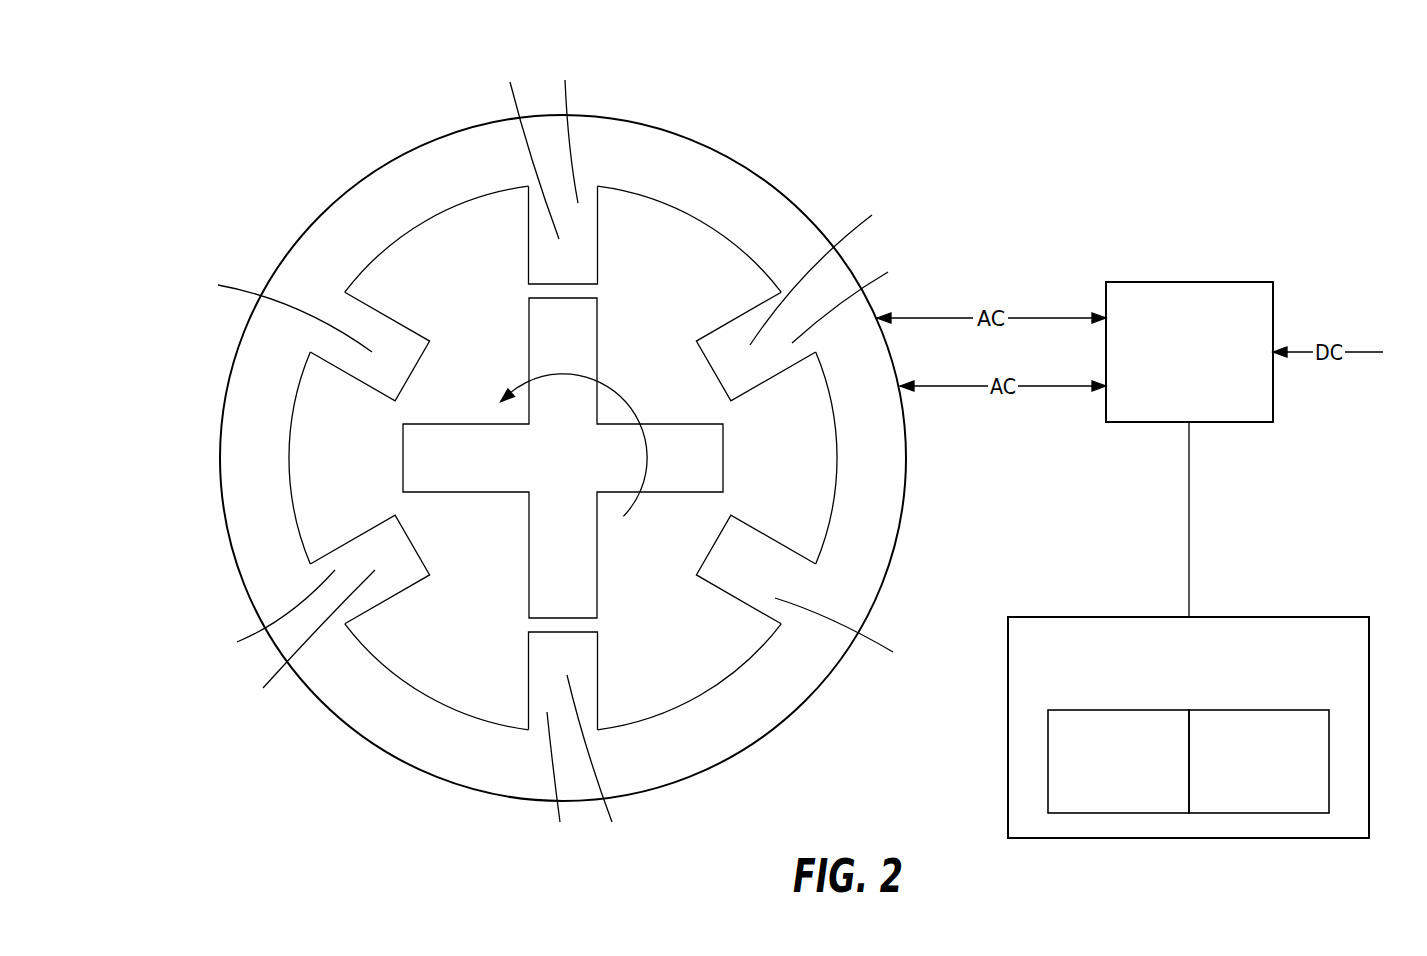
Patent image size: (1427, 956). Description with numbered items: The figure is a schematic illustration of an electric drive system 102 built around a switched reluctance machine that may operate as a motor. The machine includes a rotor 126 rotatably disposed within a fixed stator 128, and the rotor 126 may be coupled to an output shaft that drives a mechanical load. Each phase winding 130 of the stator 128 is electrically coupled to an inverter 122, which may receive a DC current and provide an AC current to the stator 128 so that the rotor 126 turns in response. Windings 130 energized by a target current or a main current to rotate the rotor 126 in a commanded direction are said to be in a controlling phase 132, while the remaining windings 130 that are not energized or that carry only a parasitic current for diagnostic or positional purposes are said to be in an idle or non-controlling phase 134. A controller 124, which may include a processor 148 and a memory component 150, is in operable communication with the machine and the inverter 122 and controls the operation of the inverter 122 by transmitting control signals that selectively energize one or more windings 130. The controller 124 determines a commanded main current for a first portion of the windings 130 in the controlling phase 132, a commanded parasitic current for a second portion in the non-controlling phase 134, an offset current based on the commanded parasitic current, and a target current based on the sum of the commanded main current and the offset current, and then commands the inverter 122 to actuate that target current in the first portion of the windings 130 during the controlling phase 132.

The electric drive system 102 is at (330, 138).
The inverter 122 is at (1207, 282).
The controller 124 is at (1292, 615).
The rotor 126 is at (560, 458).
The stator 128 is at (760, 175).
The winding 130 is at (556, 453).
The controlling phase 132 is at (535, 457).
The non-controlling phase 134 is at (562, 459).
The processor 148 is at (1114, 813).
The memory component 150 is at (1263, 813).